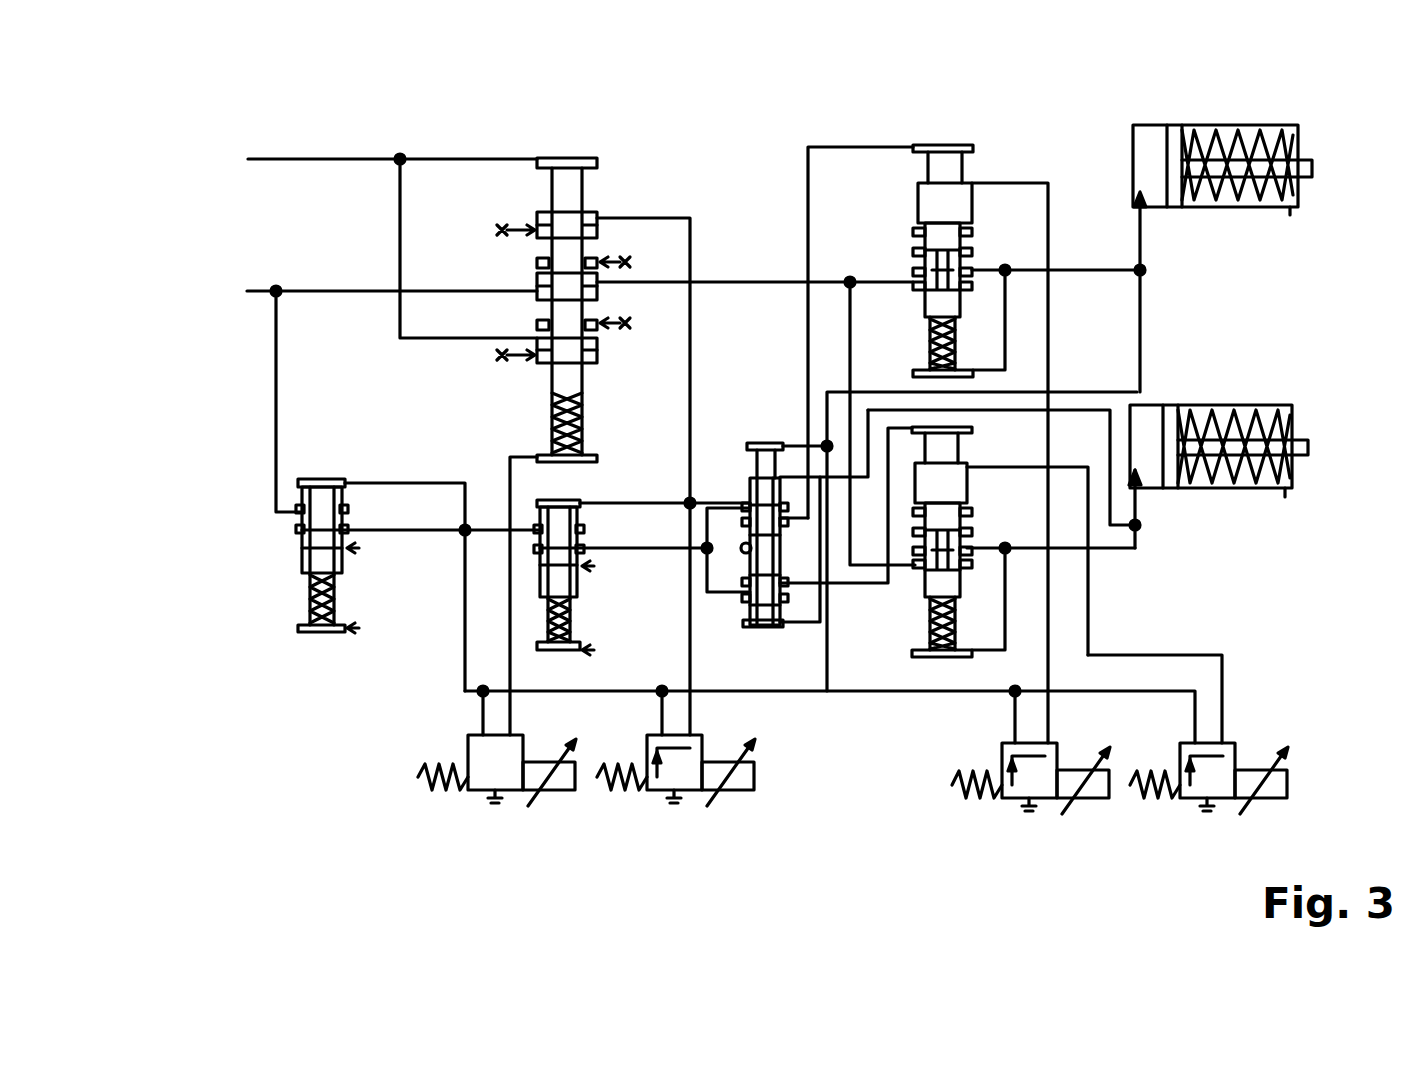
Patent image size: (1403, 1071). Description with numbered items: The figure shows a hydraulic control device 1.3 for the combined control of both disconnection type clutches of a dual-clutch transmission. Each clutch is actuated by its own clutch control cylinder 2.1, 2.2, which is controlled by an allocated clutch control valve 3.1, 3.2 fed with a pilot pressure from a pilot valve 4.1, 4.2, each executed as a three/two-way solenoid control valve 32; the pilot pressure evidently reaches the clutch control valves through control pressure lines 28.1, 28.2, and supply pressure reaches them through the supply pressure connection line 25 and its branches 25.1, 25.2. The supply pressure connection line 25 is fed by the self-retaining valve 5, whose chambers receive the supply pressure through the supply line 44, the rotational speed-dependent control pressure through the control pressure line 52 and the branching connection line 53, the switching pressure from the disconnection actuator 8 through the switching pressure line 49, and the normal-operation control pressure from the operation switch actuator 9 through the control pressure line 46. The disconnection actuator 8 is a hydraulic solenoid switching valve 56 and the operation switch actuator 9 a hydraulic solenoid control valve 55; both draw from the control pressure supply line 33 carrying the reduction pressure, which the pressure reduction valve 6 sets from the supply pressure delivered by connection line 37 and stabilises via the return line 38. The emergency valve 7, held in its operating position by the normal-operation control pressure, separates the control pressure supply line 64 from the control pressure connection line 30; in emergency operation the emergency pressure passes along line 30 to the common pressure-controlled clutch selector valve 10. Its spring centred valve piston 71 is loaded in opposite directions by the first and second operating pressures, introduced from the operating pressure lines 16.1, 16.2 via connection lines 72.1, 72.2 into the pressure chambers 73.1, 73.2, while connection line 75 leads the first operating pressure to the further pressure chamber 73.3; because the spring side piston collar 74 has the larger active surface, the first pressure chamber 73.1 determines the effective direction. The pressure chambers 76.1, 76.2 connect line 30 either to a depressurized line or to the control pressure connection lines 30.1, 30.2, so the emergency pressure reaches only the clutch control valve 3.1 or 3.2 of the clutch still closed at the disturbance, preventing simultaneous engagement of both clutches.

The self-retaining valve 5 is at (522, 204).
The control pressure line 52 is at (283, 159).
The connection line 53 is at (398, 212).
The supply line 44 is at (345, 291).
The control pressure connection line 30 is at (345, 291).
The pressure reduction valve 6 is at (287, 572).
The return line 38 is at (466, 483).
The connection line 37 is at (511, 453).
The emergency valve 7 is at (535, 579).
The control pressure supply line 64 is at (482, 528).
The switching pressure line 49 is at (622, 543).
The pressure chamber 73.2 is at (748, 503).
The pressure chamber 76.1 is at (718, 503).
The control pressure line 46 is at (692, 340).
The clutch selector valve 10 is at (781, 628).
The valve piston 71 is at (778, 600).
The spring side piston collar 74 is at (746, 590).
The pressure chamber 76.2 is at (762, 604).
The first pressure chamber 73.1 is at (748, 590).
The supply pressure connection line 25 is at (763, 443).
The third pressure chamber 73.3 is at (808, 147).
The control pressure connection line 30.2 is at (853, 586).
The connection line 75 is at (830, 392).
The connection line 72.1 is at (1103, 392).
The control pressure connection line 30.1 is at (813, 233).
The valve cap 25.1 is at (947, 145).
The clutch control valve 3.1 is at (982, 283).
The line 28.1 is at (1050, 235).
The feedback line 25.2 is at (795, 437).
The operating pressure line 16.1 is at (1140, 293).
The clutch control cylinder 2.1 is at (1224, 119).
The clutch control cylinder 2.2 is at (1235, 490).
The connection line 72.2 is at (1140, 532).
The clutch control valve 3.2 is at (975, 565).
The feedback line 28.2 is at (1222, 718).
The operating pressure line 16.2 is at (1089, 553).
The hydraulic control device 1.3 is at (1230, 648).
The control pressure supply line 33 is at (464, 643).
The disconnection actuator 8 is at (478, 798).
The hydraulic solenoid switching valve 56 is at (549, 772).
The operation switch actuator 9 is at (688, 800).
The hydraulic solenoid control valve 55 is at (728, 772).
The pilot valve 4.1 is at (1058, 803).
The pilot valve 4.2 is at (1215, 803).
The 3/2-way solenoid control valve 32 is at (1172, 836).